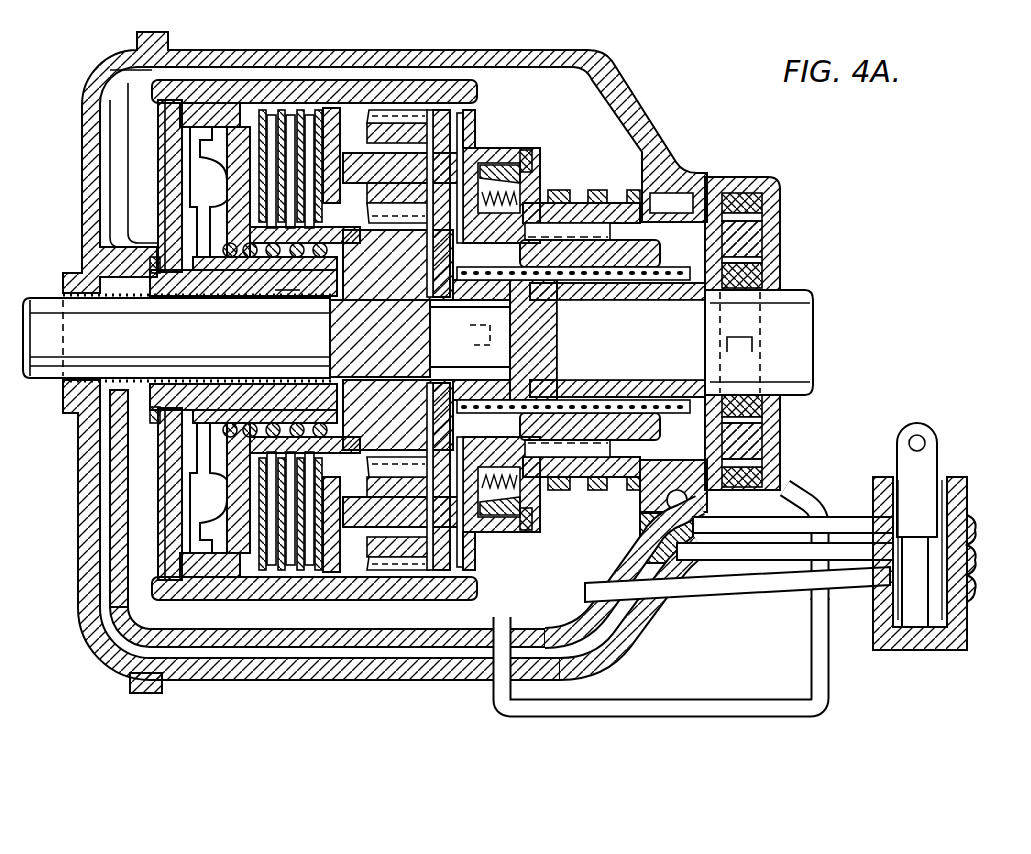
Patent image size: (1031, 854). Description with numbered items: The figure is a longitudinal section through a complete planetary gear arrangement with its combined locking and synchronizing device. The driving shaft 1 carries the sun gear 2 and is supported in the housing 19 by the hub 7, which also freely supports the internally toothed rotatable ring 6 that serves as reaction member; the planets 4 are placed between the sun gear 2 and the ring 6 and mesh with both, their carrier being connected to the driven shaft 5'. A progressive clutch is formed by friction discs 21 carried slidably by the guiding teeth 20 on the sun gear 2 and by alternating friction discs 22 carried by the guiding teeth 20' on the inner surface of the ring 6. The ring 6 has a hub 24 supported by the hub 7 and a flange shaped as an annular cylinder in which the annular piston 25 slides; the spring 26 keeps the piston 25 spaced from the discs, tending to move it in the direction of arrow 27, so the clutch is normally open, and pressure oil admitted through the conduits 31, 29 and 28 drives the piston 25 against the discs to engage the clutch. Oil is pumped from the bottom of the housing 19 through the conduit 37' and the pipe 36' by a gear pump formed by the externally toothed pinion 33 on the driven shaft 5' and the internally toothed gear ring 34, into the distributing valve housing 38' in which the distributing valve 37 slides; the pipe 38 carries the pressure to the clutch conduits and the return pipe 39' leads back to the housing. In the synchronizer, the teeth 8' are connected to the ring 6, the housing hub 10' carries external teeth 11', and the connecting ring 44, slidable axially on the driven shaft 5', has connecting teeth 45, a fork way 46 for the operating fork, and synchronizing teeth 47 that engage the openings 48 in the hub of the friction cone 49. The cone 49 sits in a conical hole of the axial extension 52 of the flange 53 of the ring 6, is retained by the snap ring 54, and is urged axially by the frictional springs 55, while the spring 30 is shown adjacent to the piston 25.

The driving shaft 1 is at (42, 312).
The sun gear 2 is at (393, 255).
The planets 4 is at (390, 477).
The driven shaft 5' is at (691, 340).
The internally toothed rotatable ring 6 is at (440, 85).
The hub 7 is at (187, 400).
The teeth 8' is at (573, 385).
The hub 10' is at (598, 281).
The external teeth 11' is at (573, 292).
The housing 19 is at (88, 163).
The guiding teeth 20 is at (208, 488).
The guiding teeth 20' is at (405, 576).
The friction discs 21 is at (256, 113).
The friction discs 22 is at (284, 112).
The hub 24 is at (235, 290).
The annular piston 25 is at (215, 210).
The spring 26 is at (275, 290).
The arrow 27 is at (260, 390).
The conduit 28 is at (100, 452).
The conduit 29 is at (117, 390).
The spring 30 is at (232, 443).
The conduit 31 is at (200, 283).
The externally toothed pinion 33 is at (780, 403).
The internally toothed gear ring 34 is at (780, 437).
The conduit 36' is at (822, 534).
The distributing valve 37 is at (931, 517).
The conduit 37' is at (695, 653).
The pipe 38 is at (939, 563).
The distributing valve housing 38' is at (785, 525).
The rod 39' is at (737, 599).
The connecting ring 44 is at (600, 203).
The connecting teeth 45 is at (623, 240).
The fork way 46 is at (613, 492).
The synchronizing teeth 47 is at (570, 203).
The openings 48 is at (540, 200).
The friction cone 49 is at (515, 185).
The axial extension 52 is at (528, 162).
The flange 53 is at (465, 148).
The snap ring 54 is at (517, 513).
The frictional springs 55 is at (517, 490).